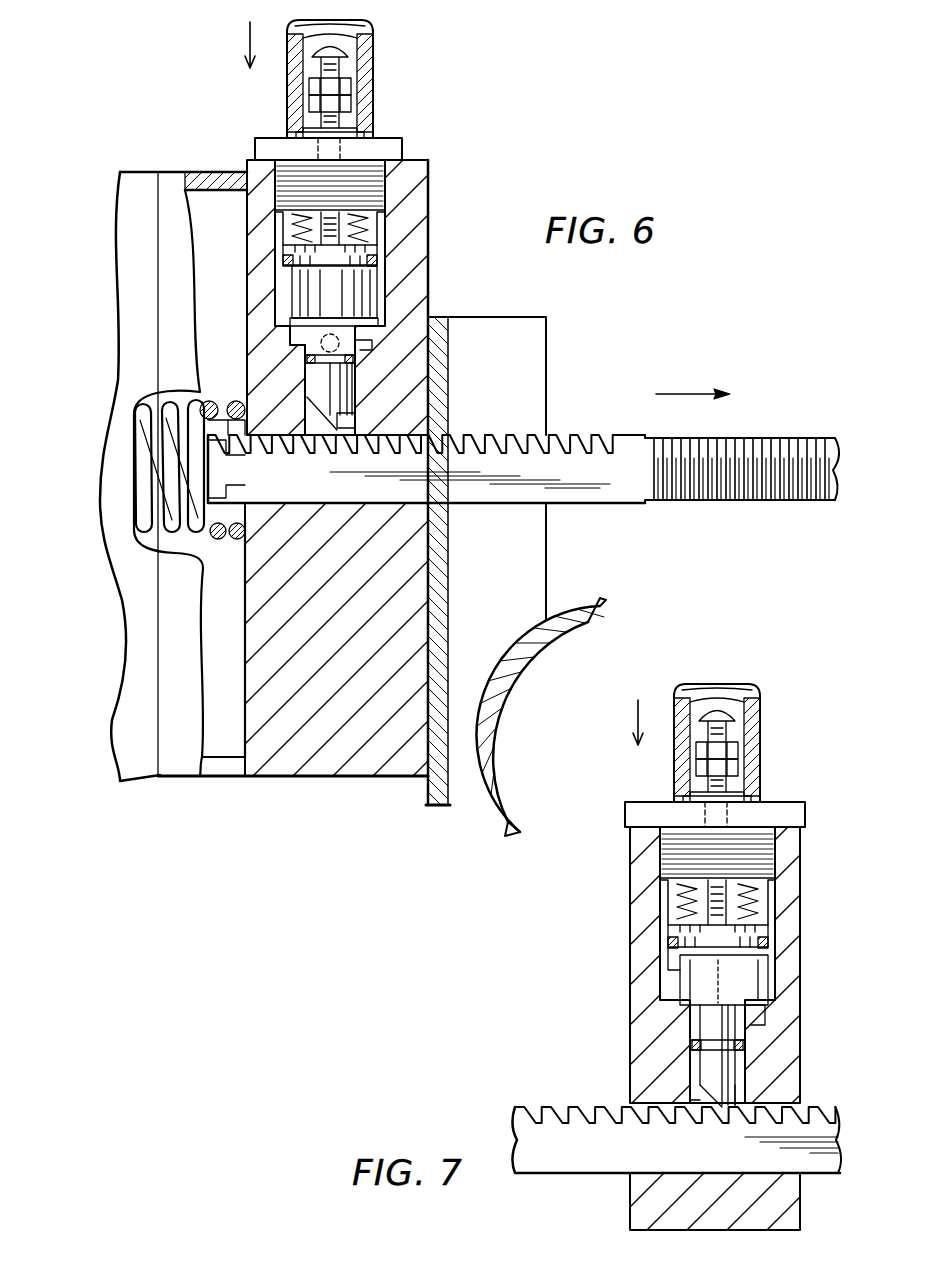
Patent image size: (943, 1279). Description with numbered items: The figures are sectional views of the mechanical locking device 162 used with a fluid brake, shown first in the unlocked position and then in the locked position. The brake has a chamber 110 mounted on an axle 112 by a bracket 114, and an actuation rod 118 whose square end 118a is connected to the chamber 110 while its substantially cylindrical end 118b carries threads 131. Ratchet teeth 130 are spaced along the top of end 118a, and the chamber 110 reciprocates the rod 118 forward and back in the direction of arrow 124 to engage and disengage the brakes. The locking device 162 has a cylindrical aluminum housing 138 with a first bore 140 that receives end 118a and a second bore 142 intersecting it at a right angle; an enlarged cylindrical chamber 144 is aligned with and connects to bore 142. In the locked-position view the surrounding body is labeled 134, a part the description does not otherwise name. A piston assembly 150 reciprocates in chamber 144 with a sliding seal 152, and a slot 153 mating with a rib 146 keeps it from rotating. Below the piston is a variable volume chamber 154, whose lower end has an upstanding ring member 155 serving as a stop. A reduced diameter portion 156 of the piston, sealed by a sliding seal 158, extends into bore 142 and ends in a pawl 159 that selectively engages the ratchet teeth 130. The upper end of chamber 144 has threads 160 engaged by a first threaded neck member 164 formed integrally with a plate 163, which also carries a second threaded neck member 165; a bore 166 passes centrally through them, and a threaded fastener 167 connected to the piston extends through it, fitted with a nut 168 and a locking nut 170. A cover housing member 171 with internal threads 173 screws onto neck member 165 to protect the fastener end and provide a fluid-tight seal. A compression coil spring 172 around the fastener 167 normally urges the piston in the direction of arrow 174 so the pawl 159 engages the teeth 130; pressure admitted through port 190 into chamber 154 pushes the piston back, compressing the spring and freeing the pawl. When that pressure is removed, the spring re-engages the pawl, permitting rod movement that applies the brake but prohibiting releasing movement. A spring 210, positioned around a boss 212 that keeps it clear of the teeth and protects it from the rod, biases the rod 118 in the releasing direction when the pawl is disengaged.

In FIG. 6, the chamber 110 is at (178, 138).
In FIG. 6, the axle 112 is at (586, 612).
In FIG. 6, the bracket 114 is at (528, 556).
In FIG. 7, the actuation rod 118 is at (527, 1089).
In FIG. 6, the end of rod 118a is at (602, 480).
In FIG. 7, the end of rod 118a is at (592, 1178).
In FIG. 6, the end of rod 118b is at (762, 437).
In FIG. 6, the arrow 124 is at (693, 381).
In FIG. 6, the ratchet teeth 130 is at (592, 434).
In FIG. 7, the ratchet teeth 130 is at (556, 1106).
In FIG. 6, the threads 131 is at (790, 487).
In FIG. 7, the body 134 is at (790, 905).
In FIG. 6, the housing 138 is at (415, 178).
In FIG. 6, the first bore 140 is at (345, 498).
In FIG. 6, the second bore 142 is at (296, 428).
In FIG. 7, the second bore 142 is at (690, 1096).
In FIG. 6, the cylindrical chamber 144 is at (288, 259).
In FIG. 7, the cylindrical chamber 144 is at (765, 926).
In FIG. 6, the rib 146 is at (288, 333).
In FIG. 7, the rib 146 is at (680, 989).
In FIG. 6, the piston assembly 150 is at (378, 253).
In FIG. 7, the piston assembly 150 is at (675, 936).
In FIG. 6, the sliding seal 152 is at (372, 263).
In FIG. 7, the sliding seal 152 is at (772, 946).
In FIG. 6, the slot 153 is at (293, 286).
In FIG. 6, the variable volume chamber 154 is at (300, 345).
In FIG. 7, the variable volume chamber 154 is at (760, 1013).
In FIG. 6, the ring member 155 is at (372, 345).
In FIG. 7, the ring member 155 is at (745, 1026).
In FIG. 6, the reduced diameter portion 156 is at (343, 387).
In FIG. 7, the reduced diameter portion 156 is at (695, 1041).
In FIG. 6, the sliding seal 158 is at (300, 363).
In FIG. 7, the sliding seal 158 is at (750, 1046).
In FIG. 6, the pawl 159 is at (343, 419).
In FIG. 7, the pawl 159 is at (738, 1083).
In FIG. 6, the threads 160 is at (385, 197).
In FIG. 7, the threads 160 is at (770, 851).
In FIG. 6, the mechanical locking device 162 is at (278, 112).
In FIG. 7, the mechanical locking device 162 is at (822, 784).
In FIG. 6, the plate 163 is at (392, 150).
In FIG. 7, the plate 163 is at (635, 817).
In FIG. 6, the first threaded neck member 164 is at (318, 188).
In FIG. 7, the first threaded neck member 164 is at (720, 856).
In FIG. 6, the second threaded neck member 165 is at (356, 130).
In FIG. 7, the second threaded neck member 165 is at (745, 796).
In FIG. 6, the bore 166 is at (318, 149).
In FIG. 7, the bore 166 is at (735, 816).
In FIG. 6, the threaded fastener 167 is at (338, 63).
In FIG. 7, the threaded fastener 167 is at (730, 743).
In FIG. 6, the nut 168 is at (350, 87).
In FIG. 7, the nut 168 is at (745, 763).
In FIG. 6, the locking nut 170 is at (350, 103).
In FIG. 7, the locking nut 170 is at (745, 779).
In FIG. 6, the cover housing member 171 is at (366, 30).
In FIG. 7, the cover housing member 171 is at (752, 697).
In FIG. 6, the compression coil spring 172 is at (296, 229).
In FIG. 7, the compression coil spring 172 is at (690, 906).
In FIG. 6, the internal threads 173 is at (300, 137).
In FIG. 7, the internal threads 173 is at (680, 801).
In FIG. 6, the arrow 174 is at (250, 22).
In FIG. 7, the arrow 174 is at (638, 708).
In FIG. 6, the port 190 is at (348, 349).
In FIG. 7, the port 190 is at (724, 980).
In FIG. 6, the spring 210 is at (180, 428).
In FIG. 6, the boss 212 is at (230, 449).